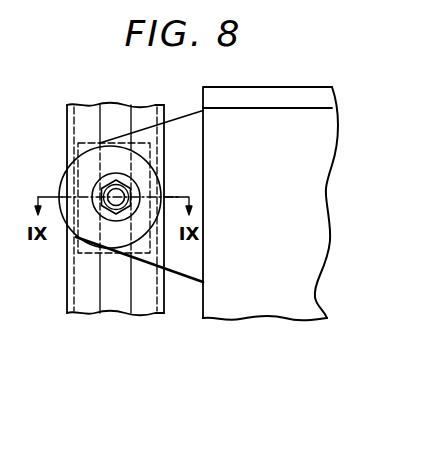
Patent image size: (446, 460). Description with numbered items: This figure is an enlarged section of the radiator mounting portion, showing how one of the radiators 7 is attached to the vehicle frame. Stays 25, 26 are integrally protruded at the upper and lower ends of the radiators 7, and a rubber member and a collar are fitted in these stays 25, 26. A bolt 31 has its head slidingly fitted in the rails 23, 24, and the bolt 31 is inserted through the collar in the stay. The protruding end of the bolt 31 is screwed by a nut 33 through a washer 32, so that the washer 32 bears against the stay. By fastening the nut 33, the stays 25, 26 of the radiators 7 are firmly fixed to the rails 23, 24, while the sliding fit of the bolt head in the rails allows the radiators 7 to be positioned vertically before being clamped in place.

The radiator 7 is at (288, 310).
The rail 23 is at (111, 237).
The rail 24 is at (88, 298).
The stay 25 is at (145, 233).
The stay 26 is at (187, 270).
The bolt 31 is at (100, 191).
The washer 32 is at (90, 177).
The nut 33 is at (108, 210).